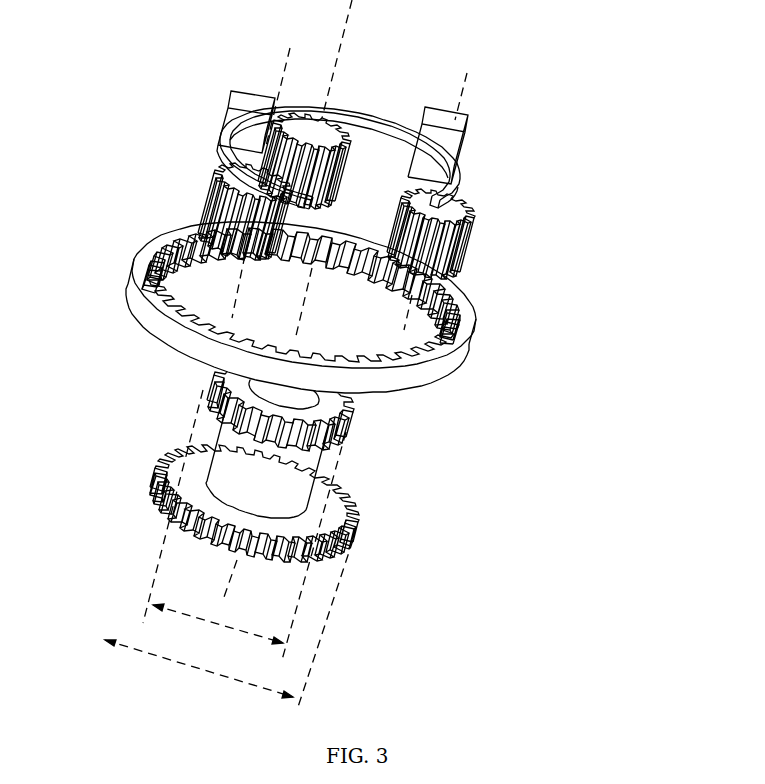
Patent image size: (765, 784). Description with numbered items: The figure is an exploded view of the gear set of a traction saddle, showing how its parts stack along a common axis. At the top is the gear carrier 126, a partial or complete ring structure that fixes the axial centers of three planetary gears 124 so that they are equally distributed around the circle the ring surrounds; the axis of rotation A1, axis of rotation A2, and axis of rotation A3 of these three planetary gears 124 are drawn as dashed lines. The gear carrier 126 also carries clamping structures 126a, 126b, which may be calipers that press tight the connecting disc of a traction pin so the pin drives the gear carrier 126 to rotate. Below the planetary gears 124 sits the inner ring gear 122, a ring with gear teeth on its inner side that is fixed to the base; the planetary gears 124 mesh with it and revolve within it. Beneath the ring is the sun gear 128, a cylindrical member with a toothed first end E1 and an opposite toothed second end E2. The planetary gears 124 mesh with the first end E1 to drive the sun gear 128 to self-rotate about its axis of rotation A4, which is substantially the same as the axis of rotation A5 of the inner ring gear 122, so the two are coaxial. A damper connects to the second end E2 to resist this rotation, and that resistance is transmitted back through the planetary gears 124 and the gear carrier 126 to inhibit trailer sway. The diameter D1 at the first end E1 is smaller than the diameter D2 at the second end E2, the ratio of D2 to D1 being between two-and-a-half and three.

The inner ring gear 122 is at (195, 338).
The planetary gears 124 is at (225, 203).
The gear carrier 126 is at (354, 138).
The clamping structure 126a is at (228, 127).
The clamping structure 126b is at (465, 160).
The sun gear 128 is at (230, 465).
The first end E1 is at (363, 423).
The second end E2 is at (365, 532).
The axis of rotation A1 is at (288, 82).
The axis of rotation A2 is at (340, 60).
The axis of rotation A3 is at (462, 112).
The axis of rotation A4 is at (235, 562).
The axis of rotation A5 is at (300, 312).
The diameter D1 is at (218, 629).
The diameter D2 is at (199, 672).